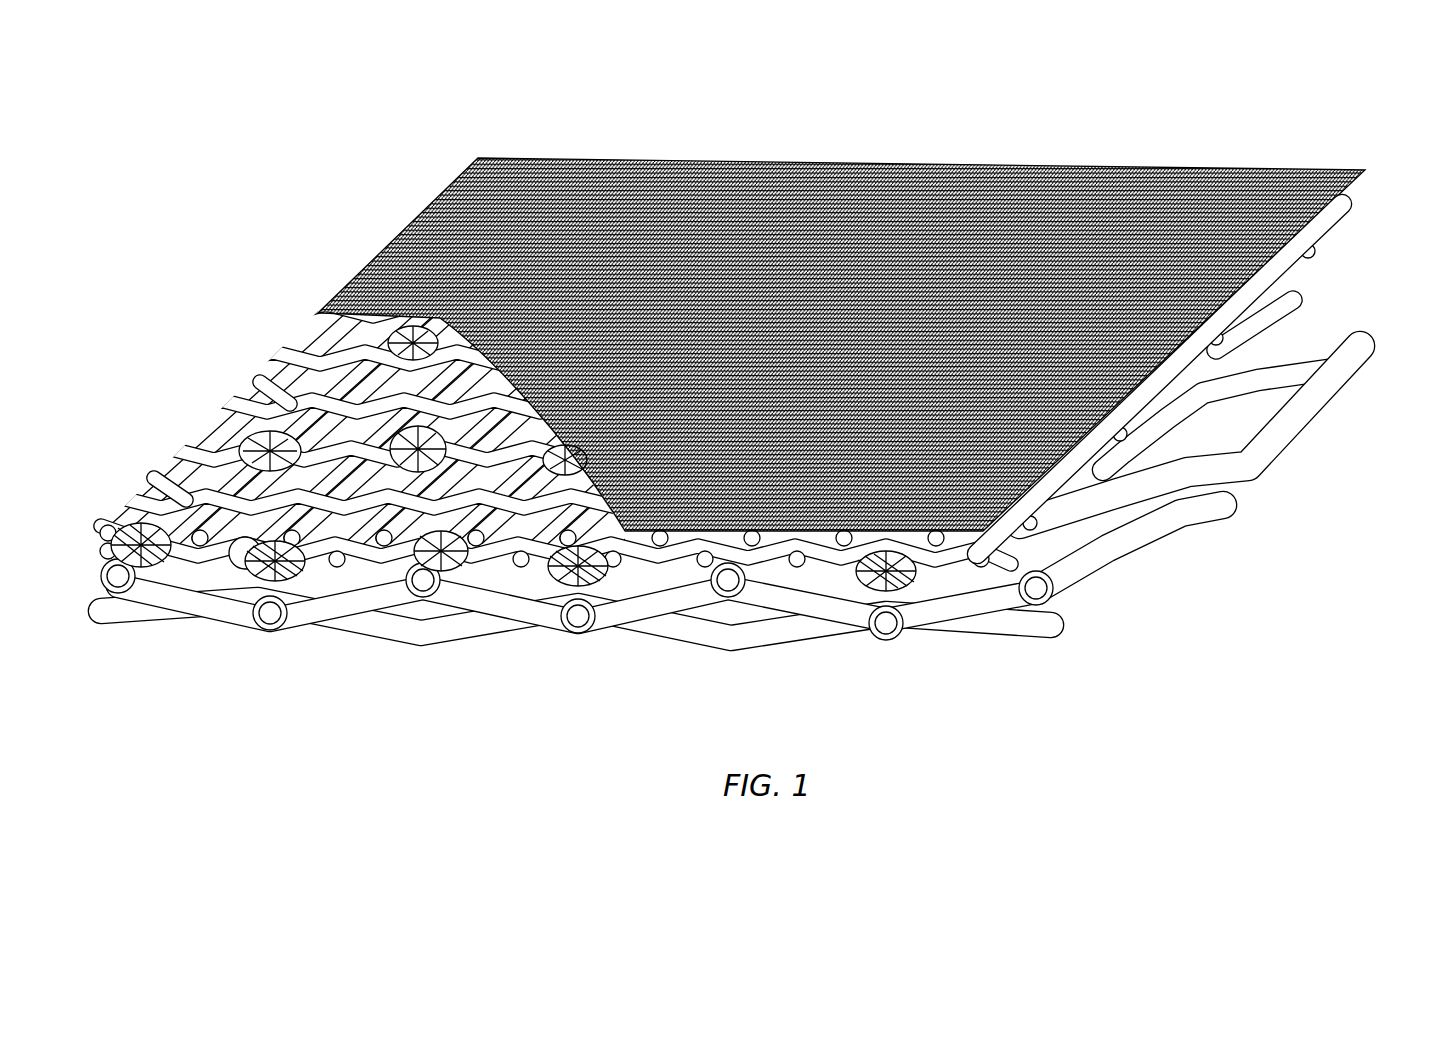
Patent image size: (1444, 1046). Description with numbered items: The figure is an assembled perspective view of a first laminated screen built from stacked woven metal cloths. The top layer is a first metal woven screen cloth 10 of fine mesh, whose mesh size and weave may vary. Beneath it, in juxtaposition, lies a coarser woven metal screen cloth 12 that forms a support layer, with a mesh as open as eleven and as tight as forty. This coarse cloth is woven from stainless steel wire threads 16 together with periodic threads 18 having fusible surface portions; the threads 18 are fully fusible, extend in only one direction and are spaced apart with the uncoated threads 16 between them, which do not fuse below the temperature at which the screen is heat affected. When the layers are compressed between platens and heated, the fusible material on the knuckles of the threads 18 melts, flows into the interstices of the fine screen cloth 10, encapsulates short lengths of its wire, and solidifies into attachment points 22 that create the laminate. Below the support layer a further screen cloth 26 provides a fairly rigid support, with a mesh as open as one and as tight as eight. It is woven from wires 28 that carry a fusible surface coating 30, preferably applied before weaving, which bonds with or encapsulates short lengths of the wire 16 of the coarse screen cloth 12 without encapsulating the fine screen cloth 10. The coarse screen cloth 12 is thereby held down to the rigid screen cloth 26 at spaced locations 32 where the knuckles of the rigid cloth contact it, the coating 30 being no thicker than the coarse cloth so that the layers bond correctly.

The first metal woven screen cloth 10 is at (1278, 163).
The coarser woven metal screen cloth 12 is at (1348, 200).
The stainless steel wire threads 16 is at (327, 560).
The periodic threads having fusible surface portions 18 is at (218, 556).
The attachment points 22 is at (292, 487).
The further screen cloth 26 is at (1297, 410).
The wires 28 is at (881, 634).
The fusible surface coating 30 is at (864, 622).
The spaced locations 32 is at (557, 579).